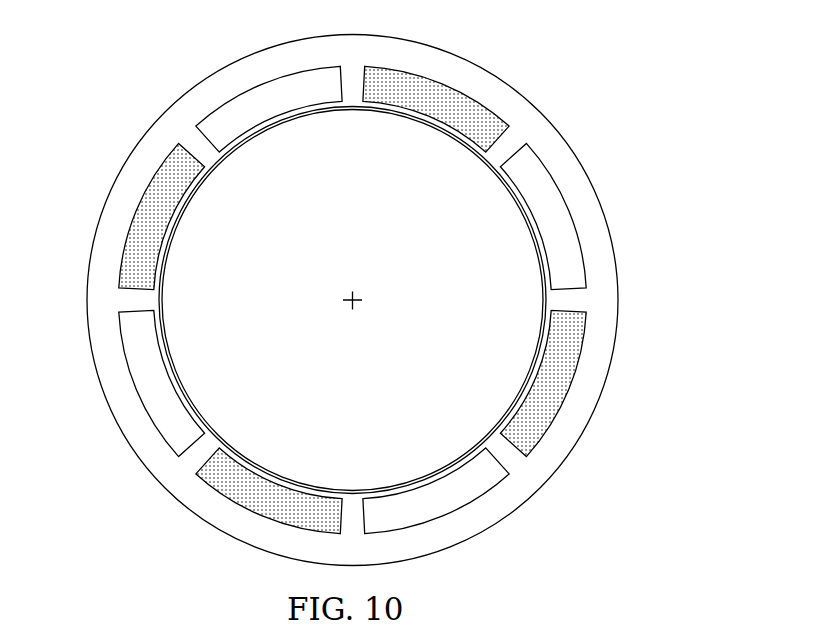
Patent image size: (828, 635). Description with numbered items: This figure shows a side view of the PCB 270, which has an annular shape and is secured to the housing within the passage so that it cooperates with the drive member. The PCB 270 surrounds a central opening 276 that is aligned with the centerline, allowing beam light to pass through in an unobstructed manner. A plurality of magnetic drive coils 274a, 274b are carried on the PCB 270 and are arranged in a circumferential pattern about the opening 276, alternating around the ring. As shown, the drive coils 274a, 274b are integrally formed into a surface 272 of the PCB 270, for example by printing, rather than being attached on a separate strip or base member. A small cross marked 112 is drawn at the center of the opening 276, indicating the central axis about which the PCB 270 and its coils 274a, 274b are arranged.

The PCB 270 is at (602, 123).
The surface 272 is at (175, 105).
The magnetic drive coil 274a is at (575, 258).
The magnetic drive coil 274b is at (555, 398).
The central opening 276 is at (206, 386).
The center axis 112 is at (352, 307).